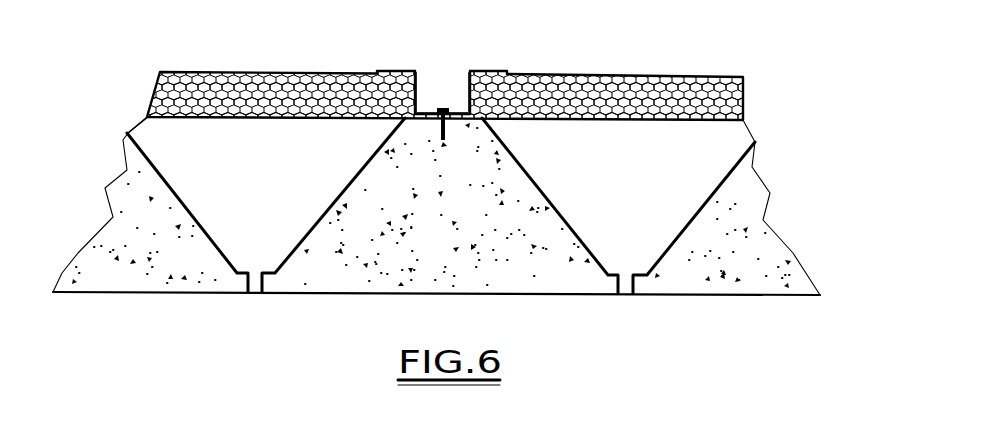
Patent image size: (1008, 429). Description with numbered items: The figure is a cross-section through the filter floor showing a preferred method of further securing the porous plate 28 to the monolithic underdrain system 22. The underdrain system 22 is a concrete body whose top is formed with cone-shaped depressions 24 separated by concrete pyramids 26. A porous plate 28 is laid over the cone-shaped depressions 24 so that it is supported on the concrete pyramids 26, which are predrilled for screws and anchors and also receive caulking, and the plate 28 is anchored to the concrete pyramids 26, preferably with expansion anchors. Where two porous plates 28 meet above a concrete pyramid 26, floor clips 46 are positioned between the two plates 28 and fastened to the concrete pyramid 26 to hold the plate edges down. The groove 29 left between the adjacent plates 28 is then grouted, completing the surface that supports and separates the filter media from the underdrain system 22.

The monolithic underdrain system 22 is at (788, 157).
The cone-shaped depression 24 is at (217, 217).
The concrete pyramid 26 is at (558, 278).
The porous plate 28 is at (607, 77).
The groove 29 is at (438, 73).
The floor clip 46 is at (493, 70).